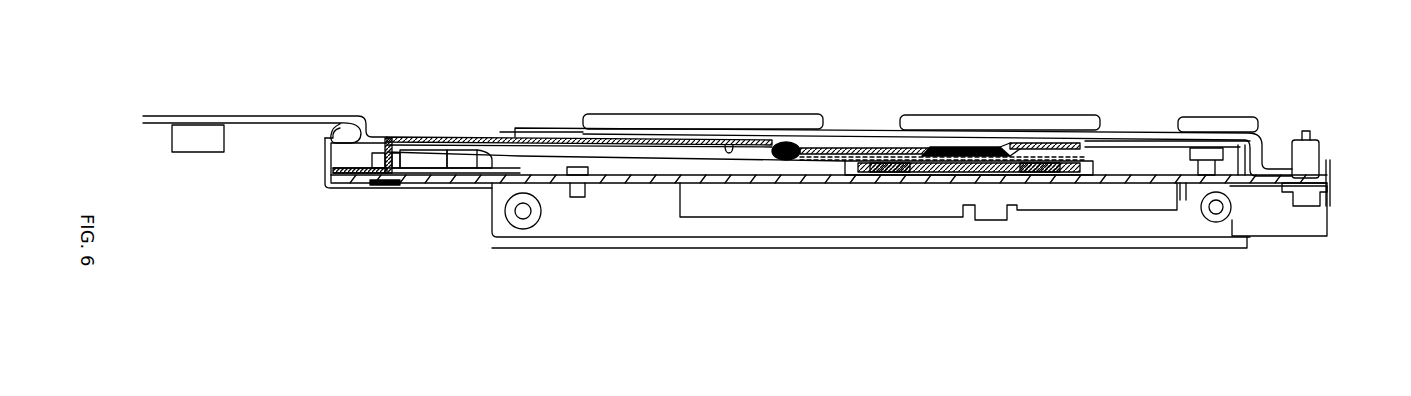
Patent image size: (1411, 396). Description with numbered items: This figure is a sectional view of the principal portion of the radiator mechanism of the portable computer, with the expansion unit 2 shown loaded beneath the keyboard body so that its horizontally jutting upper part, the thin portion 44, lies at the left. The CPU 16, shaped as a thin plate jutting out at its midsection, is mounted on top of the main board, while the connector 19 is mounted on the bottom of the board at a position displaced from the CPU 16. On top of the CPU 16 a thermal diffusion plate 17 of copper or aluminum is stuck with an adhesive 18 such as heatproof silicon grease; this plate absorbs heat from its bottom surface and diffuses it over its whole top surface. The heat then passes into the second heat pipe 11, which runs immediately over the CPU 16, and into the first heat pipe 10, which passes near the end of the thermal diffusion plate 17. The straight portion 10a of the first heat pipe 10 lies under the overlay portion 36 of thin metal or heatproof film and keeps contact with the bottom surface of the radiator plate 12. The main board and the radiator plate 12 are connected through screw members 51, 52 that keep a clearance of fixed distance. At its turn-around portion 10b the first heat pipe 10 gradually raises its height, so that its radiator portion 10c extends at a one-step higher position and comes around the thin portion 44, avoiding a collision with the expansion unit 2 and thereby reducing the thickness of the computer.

The expansion unit 2 is at (1096, 233).
The first heat pipe 10 is at (553, 149).
The straight portion 10a is at (795, 147).
The turn-around portion 10b is at (501, 141).
The radiator portion 10c is at (346, 128).
The second heat pipe 11 is at (976, 148).
The radiator plate 12 is at (434, 137).
The CPU 16 is at (943, 176).
The thermal diffusion plate 17 is at (830, 172).
The adhesive 18 is at (891, 175).
The connector 19 is at (745, 203).
The overlay portion 36 is at (730, 143).
The thin portion 44 is at (325, 191).
The screw member 51 is at (1316, 158).
The screw member 52 is at (1330, 201).